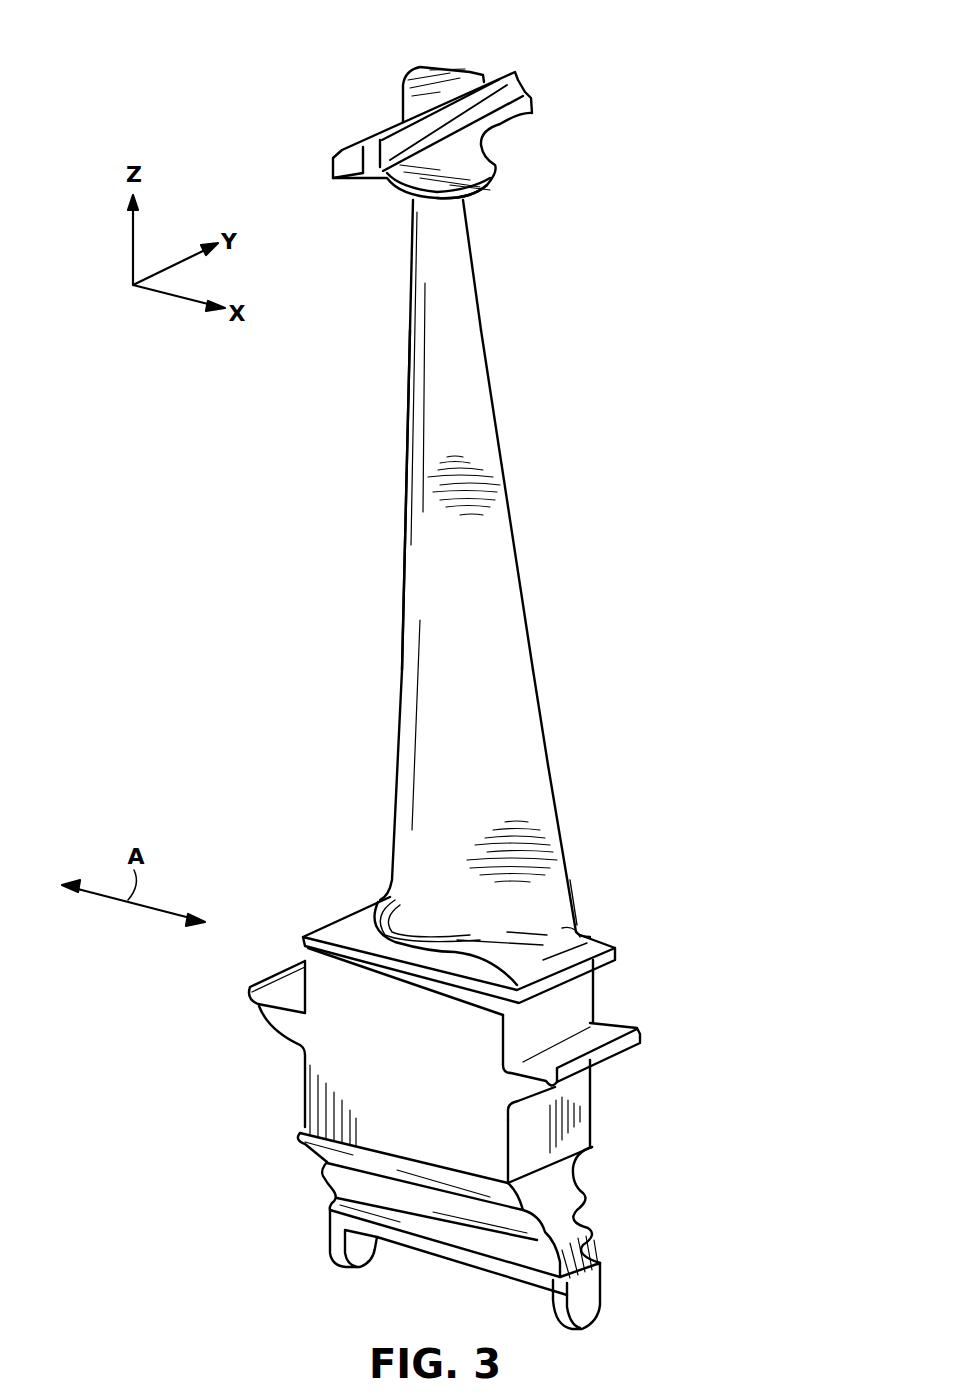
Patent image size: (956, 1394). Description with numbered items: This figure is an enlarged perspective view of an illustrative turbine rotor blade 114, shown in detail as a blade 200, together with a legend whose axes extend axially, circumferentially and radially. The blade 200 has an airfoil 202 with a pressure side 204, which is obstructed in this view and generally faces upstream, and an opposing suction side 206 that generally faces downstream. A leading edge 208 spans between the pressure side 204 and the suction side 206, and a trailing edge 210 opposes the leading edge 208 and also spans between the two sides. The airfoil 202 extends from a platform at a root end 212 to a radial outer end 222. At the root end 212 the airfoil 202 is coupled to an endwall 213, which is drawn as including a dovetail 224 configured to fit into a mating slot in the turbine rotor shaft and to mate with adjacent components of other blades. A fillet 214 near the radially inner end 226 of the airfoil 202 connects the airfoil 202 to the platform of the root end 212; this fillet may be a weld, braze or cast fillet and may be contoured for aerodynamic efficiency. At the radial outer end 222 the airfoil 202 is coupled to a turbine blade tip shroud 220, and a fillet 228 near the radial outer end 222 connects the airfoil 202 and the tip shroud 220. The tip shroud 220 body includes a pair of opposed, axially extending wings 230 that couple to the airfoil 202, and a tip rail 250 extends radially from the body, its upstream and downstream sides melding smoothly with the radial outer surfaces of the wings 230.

The turbine rotor blade 114 is at (399, 407).
The blade 200 is at (421, 667).
The airfoil 202 is at (489, 730).
The pressure side 204 is at (532, 648).
The suction side 206 is at (545, 729).
The leading edge 208 is at (556, 808).
The trailing edge 210 is at (396, 740).
The root end 212 is at (345, 926).
The endwall 213 is at (283, 929).
The fillet 214 is at (552, 933).
The turbine blade tip shroud 220 is at (503, 158).
The radial outer end 222 is at (474, 265).
The dovetail 224 is at (602, 1238).
The radially inner end 226 is at (576, 878).
The fillet 228 is at (407, 207).
The wings 230 is at (495, 176).
The tip rail 250 is at (488, 80).